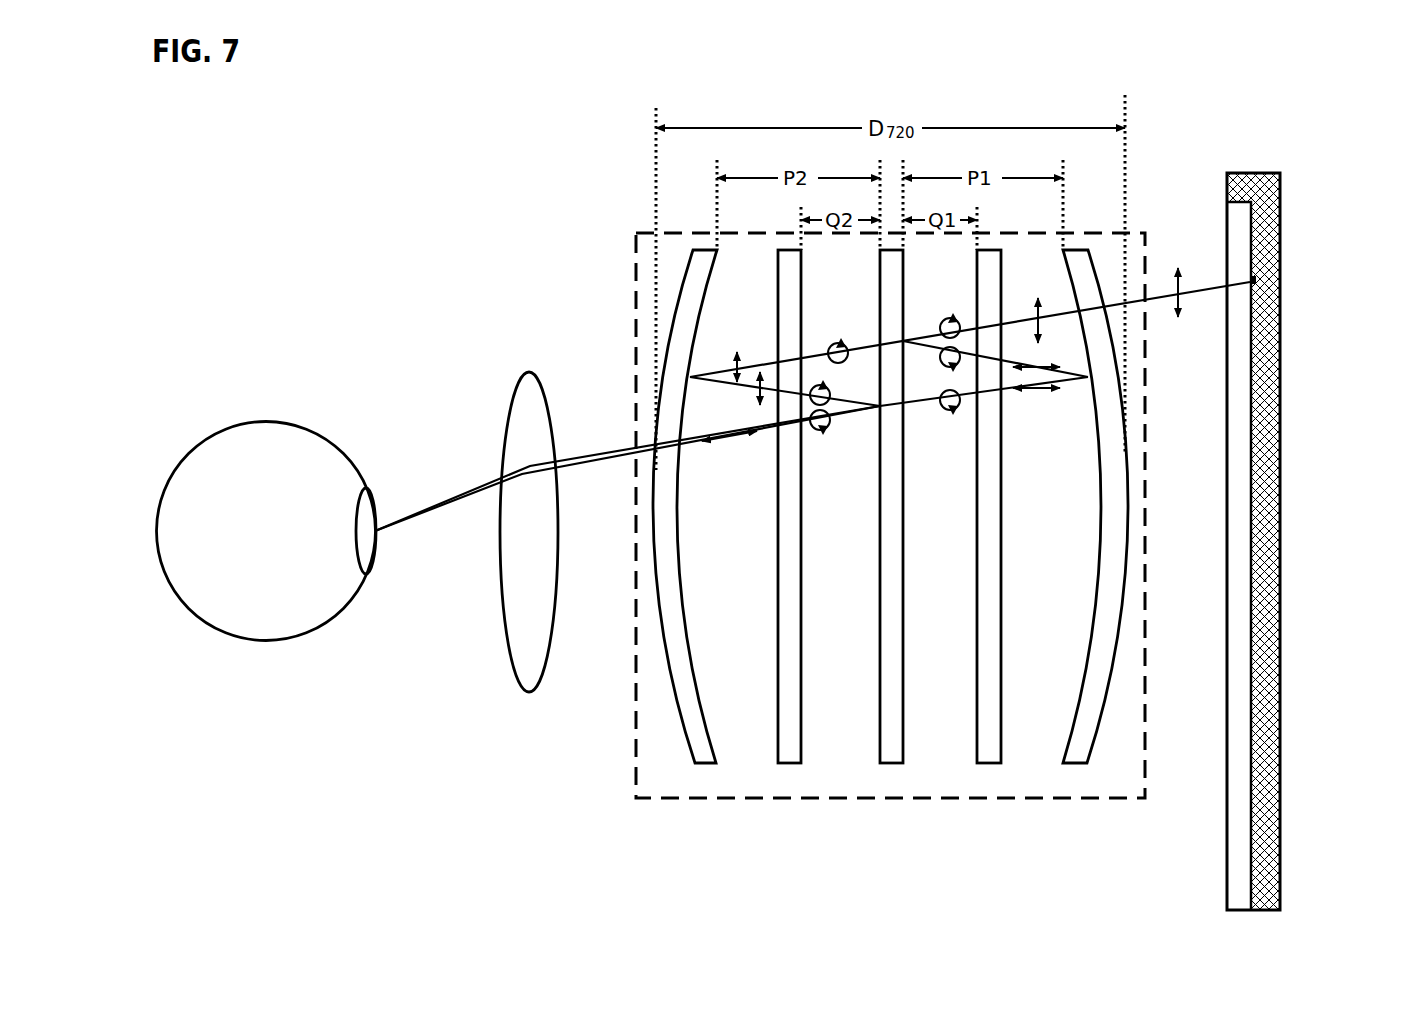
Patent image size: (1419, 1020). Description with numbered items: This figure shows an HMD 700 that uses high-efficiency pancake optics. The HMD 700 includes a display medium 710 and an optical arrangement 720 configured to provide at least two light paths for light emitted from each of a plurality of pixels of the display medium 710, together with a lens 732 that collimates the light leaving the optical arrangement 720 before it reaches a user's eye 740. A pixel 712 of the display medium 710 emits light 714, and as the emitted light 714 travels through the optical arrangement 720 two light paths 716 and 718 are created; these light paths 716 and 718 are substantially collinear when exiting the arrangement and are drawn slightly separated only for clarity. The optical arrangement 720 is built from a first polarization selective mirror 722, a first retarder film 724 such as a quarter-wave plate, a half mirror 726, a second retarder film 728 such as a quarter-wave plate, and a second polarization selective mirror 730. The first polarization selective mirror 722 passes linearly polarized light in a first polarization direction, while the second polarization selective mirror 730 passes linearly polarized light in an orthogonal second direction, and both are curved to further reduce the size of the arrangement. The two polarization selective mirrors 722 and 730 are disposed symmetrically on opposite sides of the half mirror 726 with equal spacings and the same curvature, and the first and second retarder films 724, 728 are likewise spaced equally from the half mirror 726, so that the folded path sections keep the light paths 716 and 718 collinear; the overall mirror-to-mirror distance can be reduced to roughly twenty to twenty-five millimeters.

The HMD 700 is at (1309, 146).
The display medium 710 is at (1281, 542).
The pixel 712 is at (1257, 280).
The light 714 is at (1221, 282).
The light path 716 is at (590, 465).
The light path 718 is at (578, 470).
The optical arrangement 720 is at (635, 267).
The first polarization selective mirror 722 is at (1080, 763).
The first retarder film 724 is at (990, 763).
The half mirror 726 is at (894, 763).
The second retarder film 728 is at (790, 763).
The second polarization selective mirror 730 is at (707, 763).
The lens 732 is at (527, 692).
The user's eye 740 is at (264, 640).